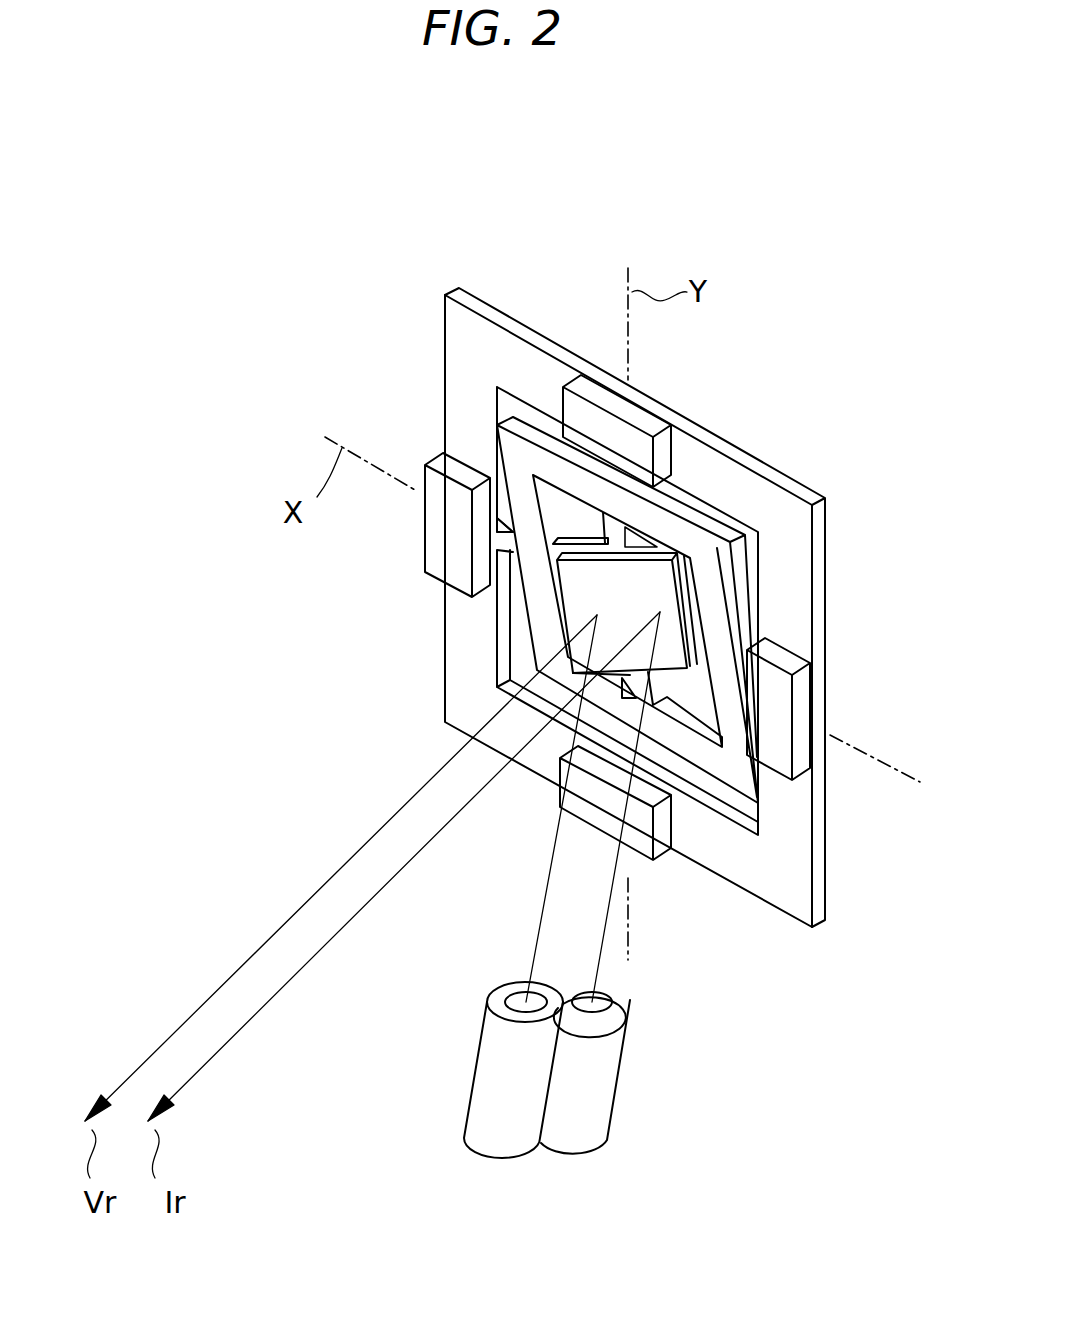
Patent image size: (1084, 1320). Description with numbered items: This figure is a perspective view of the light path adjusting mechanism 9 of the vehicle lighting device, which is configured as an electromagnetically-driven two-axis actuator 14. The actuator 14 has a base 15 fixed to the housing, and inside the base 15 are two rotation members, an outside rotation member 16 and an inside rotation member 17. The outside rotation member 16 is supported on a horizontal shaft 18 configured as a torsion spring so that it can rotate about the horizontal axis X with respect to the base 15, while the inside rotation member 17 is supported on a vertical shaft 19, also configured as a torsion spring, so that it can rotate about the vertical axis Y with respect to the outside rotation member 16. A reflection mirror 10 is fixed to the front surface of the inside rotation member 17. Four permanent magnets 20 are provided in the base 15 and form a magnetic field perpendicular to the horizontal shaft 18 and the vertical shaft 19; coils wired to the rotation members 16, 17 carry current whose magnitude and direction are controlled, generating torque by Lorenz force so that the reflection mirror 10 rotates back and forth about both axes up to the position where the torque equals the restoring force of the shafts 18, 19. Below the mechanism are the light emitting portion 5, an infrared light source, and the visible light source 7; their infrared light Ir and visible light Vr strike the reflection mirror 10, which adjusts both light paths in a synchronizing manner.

The light emitting portion 5 is at (600, 1090).
The visible light source 7 is at (490, 1072).
The light path adjusting mechanism 9 is at (420, 648).
The reflection mirror 10 is at (660, 587).
The two-axis actuator 14 is at (760, 460).
The base 15 is at (458, 343).
The outside rotation member 16 is at (530, 433).
The inside rotation member 17 is at (573, 538).
The horizontal shaft 18 is at (495, 542).
The vertical shaft 19 is at (613, 532).
The permanent magnet 20 is at (650, 423).